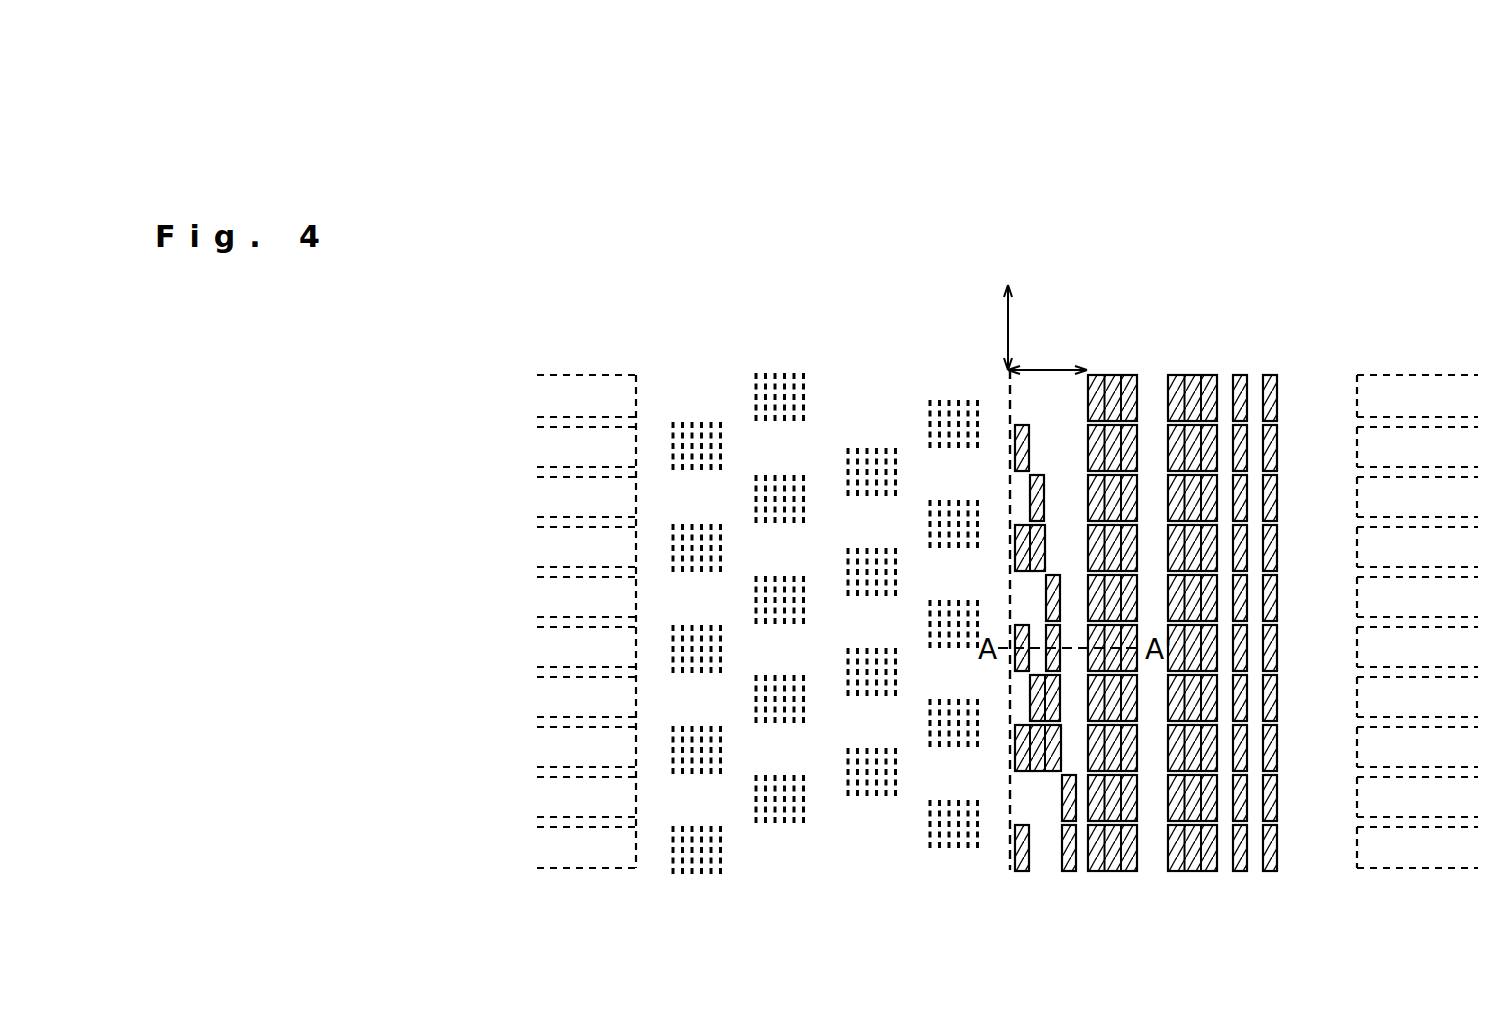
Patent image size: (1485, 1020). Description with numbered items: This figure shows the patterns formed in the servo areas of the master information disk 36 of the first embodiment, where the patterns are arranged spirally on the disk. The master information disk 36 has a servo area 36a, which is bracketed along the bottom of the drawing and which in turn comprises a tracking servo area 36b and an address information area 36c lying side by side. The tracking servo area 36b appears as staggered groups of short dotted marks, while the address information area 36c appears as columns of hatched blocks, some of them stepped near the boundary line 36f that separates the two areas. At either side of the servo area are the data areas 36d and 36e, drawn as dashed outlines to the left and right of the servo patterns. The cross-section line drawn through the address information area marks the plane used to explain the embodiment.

The master information disk 36 is at (1472, 290).
The servo area 36a is at (1327, 930).
The tracking servo area 36b is at (998, 877).
The address information area 36c is at (1280, 877).
The data area 36d is at (636, 880).
The data area 36e is at (1358, 880).
The boundary line 36f is at (1012, 861).